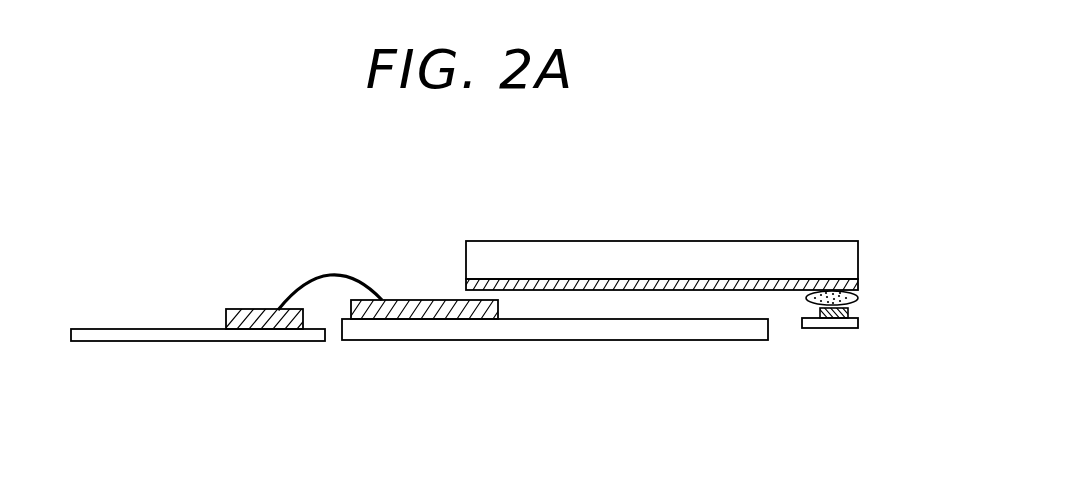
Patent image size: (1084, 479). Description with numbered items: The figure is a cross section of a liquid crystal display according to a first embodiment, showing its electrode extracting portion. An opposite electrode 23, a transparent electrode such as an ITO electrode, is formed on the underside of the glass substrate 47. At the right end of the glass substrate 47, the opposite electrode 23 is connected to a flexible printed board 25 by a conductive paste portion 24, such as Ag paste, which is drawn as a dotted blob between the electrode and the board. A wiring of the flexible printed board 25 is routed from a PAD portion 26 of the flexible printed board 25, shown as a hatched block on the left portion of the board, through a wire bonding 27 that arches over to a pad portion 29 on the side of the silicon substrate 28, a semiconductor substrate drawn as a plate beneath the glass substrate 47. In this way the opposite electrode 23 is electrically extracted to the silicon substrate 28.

The opposite electrode 23 is at (727, 277).
The conductive paste portion 24 is at (858, 292).
The flexible printed board 25 is at (148, 342).
The PAD portion 26 is at (253, 309).
The wire bonding 27 is at (332, 268).
The silicon substrate 28 is at (710, 332).
The pad portion 29 is at (440, 300).
The glass substrate 47 is at (656, 247).